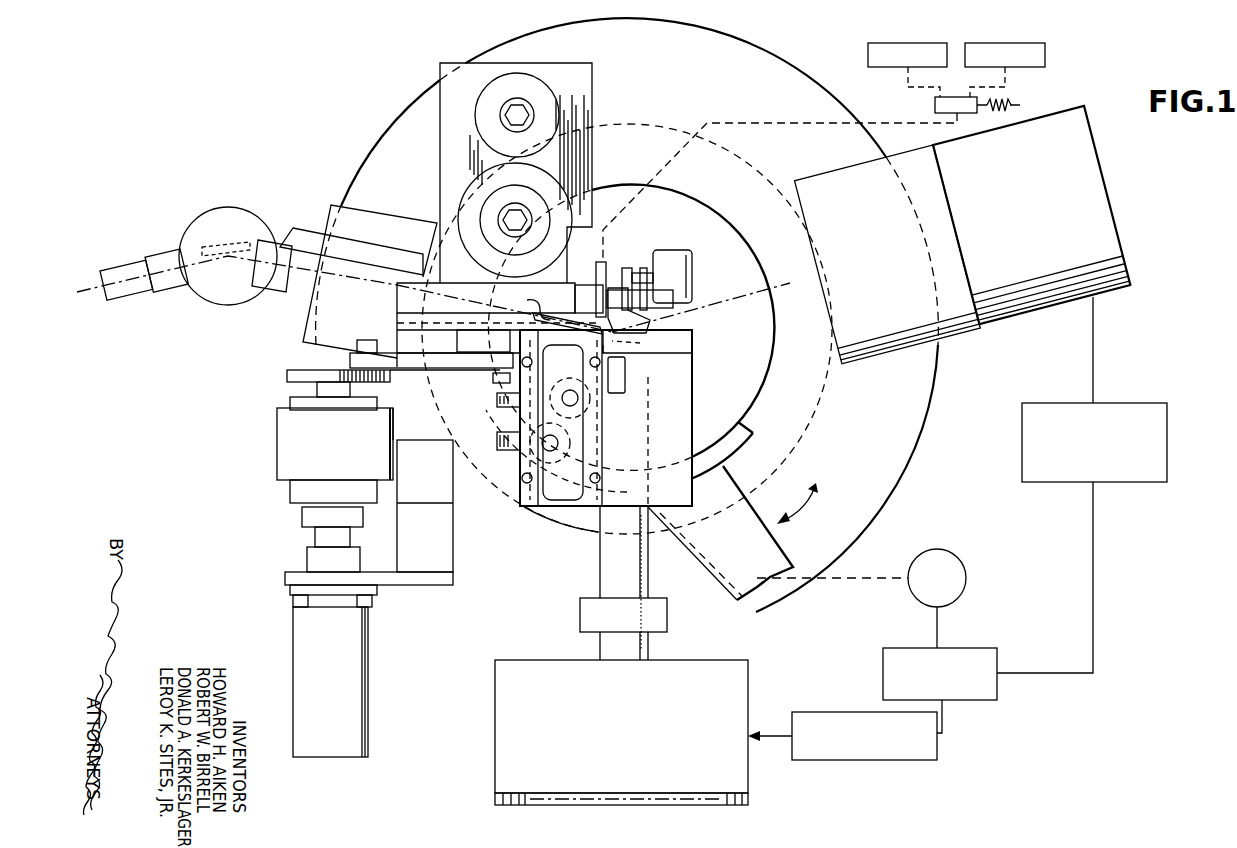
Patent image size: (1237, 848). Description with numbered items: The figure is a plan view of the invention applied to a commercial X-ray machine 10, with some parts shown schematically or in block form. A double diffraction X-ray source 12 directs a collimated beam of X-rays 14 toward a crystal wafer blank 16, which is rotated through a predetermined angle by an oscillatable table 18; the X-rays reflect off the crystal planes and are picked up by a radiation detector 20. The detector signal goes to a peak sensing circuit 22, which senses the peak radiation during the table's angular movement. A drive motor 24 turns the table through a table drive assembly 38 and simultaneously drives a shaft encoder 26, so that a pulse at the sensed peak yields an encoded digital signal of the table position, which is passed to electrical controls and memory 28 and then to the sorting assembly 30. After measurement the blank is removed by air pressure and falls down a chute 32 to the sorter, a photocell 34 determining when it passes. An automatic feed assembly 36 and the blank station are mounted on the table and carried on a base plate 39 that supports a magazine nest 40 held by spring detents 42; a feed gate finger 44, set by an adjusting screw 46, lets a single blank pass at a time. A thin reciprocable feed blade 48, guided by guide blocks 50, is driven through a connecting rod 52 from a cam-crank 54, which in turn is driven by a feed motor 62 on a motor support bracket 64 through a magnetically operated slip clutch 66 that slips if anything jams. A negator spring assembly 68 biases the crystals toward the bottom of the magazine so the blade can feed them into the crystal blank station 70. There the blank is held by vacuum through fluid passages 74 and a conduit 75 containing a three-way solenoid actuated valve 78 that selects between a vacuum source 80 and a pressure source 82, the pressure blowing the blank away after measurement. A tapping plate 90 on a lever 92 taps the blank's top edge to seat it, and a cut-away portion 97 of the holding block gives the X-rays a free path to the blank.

The X-ray machine 10 is at (377, 139).
The double diffraction X-ray source 12 is at (232, 310).
The X-rays 14 is at (337, 296).
The crystal wafer blank 16 is at (641, 343).
The oscillatable table 18 is at (752, 398).
The radiation detector 20 is at (903, 356).
The peak sensing circuit 22 is at (1022, 455).
The drive motor 24 is at (967, 577).
The shaft encoder 26 is at (993, 697).
The electrical controls and memory 28 is at (818, 712).
The sorting assembly 30 is at (723, 660).
The chute 32 is at (598, 563).
The photocell 34 is at (580, 613).
The automatic feed assembly 36 is at (272, 428).
The table drive assembly 38 is at (885, 575).
The base plate 39 is at (693, 400).
The magazine nest 40 is at (545, 506).
The spring detents 42 is at (530, 447).
The feed gate finger 44 is at (563, 422).
The adjusting screw 46 is at (615, 393).
The feed blade 48 is at (568, 313).
The guide blocks 50 is at (498, 325).
The connecting rod 52 is at (397, 353).
The cam-crank 54 is at (287, 376).
The feed motor 62 is at (370, 684).
The motor support bracket 64 is at (385, 592).
The magnetically operated slip clutch 66 is at (277, 464).
The negator spring assembly 68 is at (596, 114).
The crystal blank station 70 is at (627, 345).
The fluid passages 74 is at (660, 168).
The conduit 75 is at (598, 266).
The three-way solenoid actuated valve 78 is at (1003, 100).
The vacuum source 80 is at (868, 52).
The pressure source 82 is at (1045, 55).
The tapping plate 90 is at (589, 299).
The lever 92 is at (627, 268).
The cut-away portion 97 is at (530, 304).